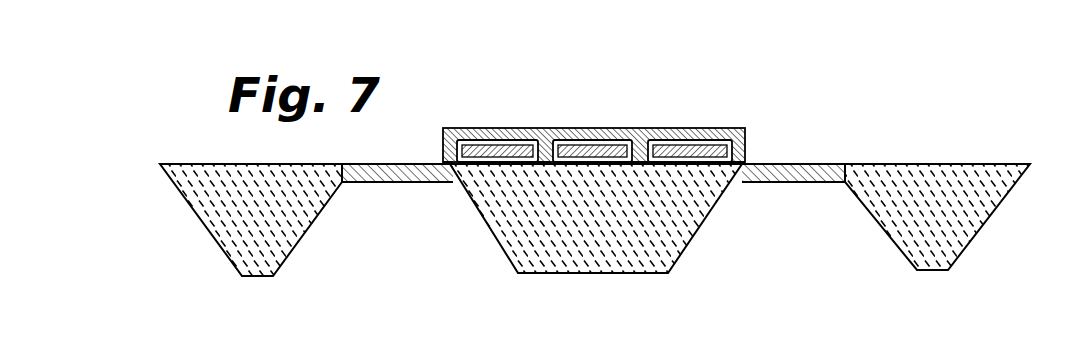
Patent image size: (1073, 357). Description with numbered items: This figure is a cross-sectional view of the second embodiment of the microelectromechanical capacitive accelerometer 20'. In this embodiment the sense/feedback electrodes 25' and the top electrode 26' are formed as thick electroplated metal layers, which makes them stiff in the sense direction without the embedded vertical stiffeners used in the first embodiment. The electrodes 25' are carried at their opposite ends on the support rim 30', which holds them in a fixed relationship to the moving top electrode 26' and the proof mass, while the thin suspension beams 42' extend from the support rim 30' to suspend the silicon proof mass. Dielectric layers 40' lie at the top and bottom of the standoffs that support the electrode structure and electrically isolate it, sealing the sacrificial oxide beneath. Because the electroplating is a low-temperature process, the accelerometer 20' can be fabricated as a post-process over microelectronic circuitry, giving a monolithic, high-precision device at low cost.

The microelectromechanical capacitive accelerometer 20' is at (611, 173).
The sense/feedback electrodes 25' is at (577, 219).
The top electrode 26' is at (610, 112).
The support rim 30' is at (611, 232).
The dielectric layers 40' is at (598, 204).
The suspension beams 42' is at (601, 206).